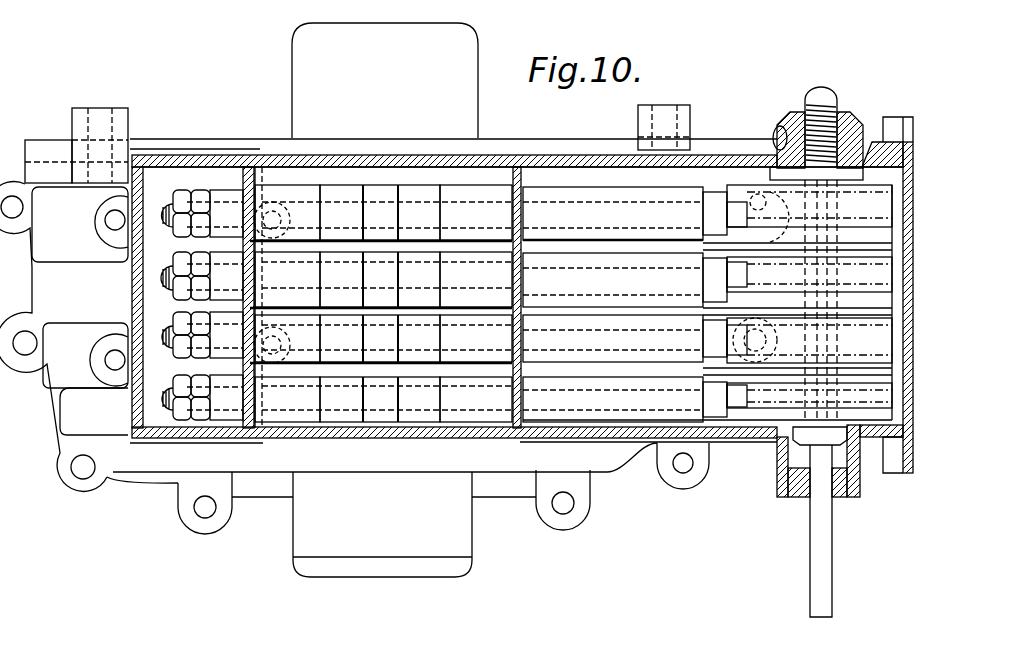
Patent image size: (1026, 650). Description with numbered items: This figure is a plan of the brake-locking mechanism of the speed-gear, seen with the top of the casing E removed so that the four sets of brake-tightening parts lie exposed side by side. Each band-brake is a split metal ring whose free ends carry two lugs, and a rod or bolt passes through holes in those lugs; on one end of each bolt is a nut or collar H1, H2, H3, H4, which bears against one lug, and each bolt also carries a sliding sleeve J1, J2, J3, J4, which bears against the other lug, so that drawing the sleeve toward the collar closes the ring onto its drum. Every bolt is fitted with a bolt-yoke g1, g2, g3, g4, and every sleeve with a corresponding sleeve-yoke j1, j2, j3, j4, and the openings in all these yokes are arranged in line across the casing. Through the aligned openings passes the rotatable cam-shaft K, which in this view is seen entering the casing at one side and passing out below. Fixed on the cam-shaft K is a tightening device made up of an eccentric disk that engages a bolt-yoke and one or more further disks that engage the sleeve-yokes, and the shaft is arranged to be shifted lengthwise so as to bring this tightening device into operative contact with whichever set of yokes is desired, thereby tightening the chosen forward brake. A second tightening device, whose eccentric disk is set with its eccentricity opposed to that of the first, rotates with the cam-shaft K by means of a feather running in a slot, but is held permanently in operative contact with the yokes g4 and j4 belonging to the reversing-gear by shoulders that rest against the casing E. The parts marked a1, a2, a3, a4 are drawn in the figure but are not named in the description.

The casing E is at (76, 271).
The nut or collar H4 is at (290, 195).
The nut or collar H1 is at (288, 277).
The nut or collar H2 is at (308, 340).
The nut or collar H3 is at (288, 407).
The pump barrel a4 is at (378, 212).
The pump barrel a1 is at (378, 272).
The pump barrel a2 is at (392, 337).
The pump barrel a3 is at (378, 400).
The sliding sleeve J4 is at (498, 208).
The sliding sleeve J1 is at (548, 268).
The sliding sleeve J2 is at (480, 343).
The sliding sleeve J3 is at (557, 398).
The sleeve-yoke j4 is at (747, 192).
The sleeve-yoke j1 is at (887, 246).
The sleeve-yoke j2 is at (883, 313).
The sleeve-yoke j3 is at (883, 377).
The bolt-yoke g4 is at (887, 206).
The bolt-yoke g1 is at (887, 264).
The bolt-yoke g2 is at (883, 342).
The bolt-yoke g3 is at (883, 405).
The cam-shaft K is at (822, 95).